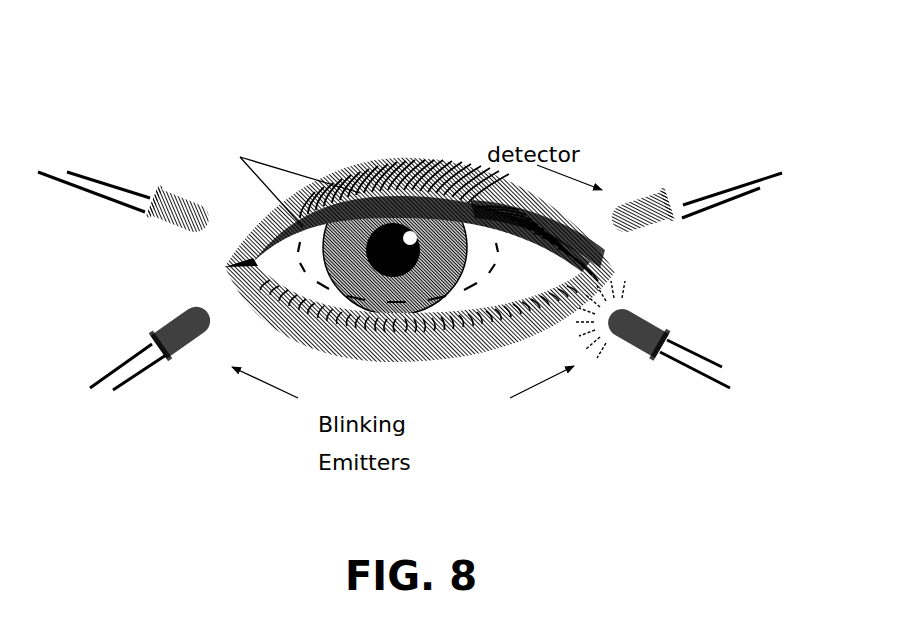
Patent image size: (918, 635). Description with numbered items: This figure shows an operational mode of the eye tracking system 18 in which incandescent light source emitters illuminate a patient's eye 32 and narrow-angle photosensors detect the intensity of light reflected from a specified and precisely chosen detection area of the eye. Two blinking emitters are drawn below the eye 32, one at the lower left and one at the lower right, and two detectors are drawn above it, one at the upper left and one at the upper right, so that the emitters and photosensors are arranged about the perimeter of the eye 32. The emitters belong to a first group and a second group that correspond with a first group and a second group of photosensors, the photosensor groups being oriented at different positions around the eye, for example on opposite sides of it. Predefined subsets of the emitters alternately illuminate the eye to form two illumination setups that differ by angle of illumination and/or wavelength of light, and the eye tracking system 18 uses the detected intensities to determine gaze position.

The patient's eye 32 is at (455, 143).
The eye tracking system 18 is at (674, 54).